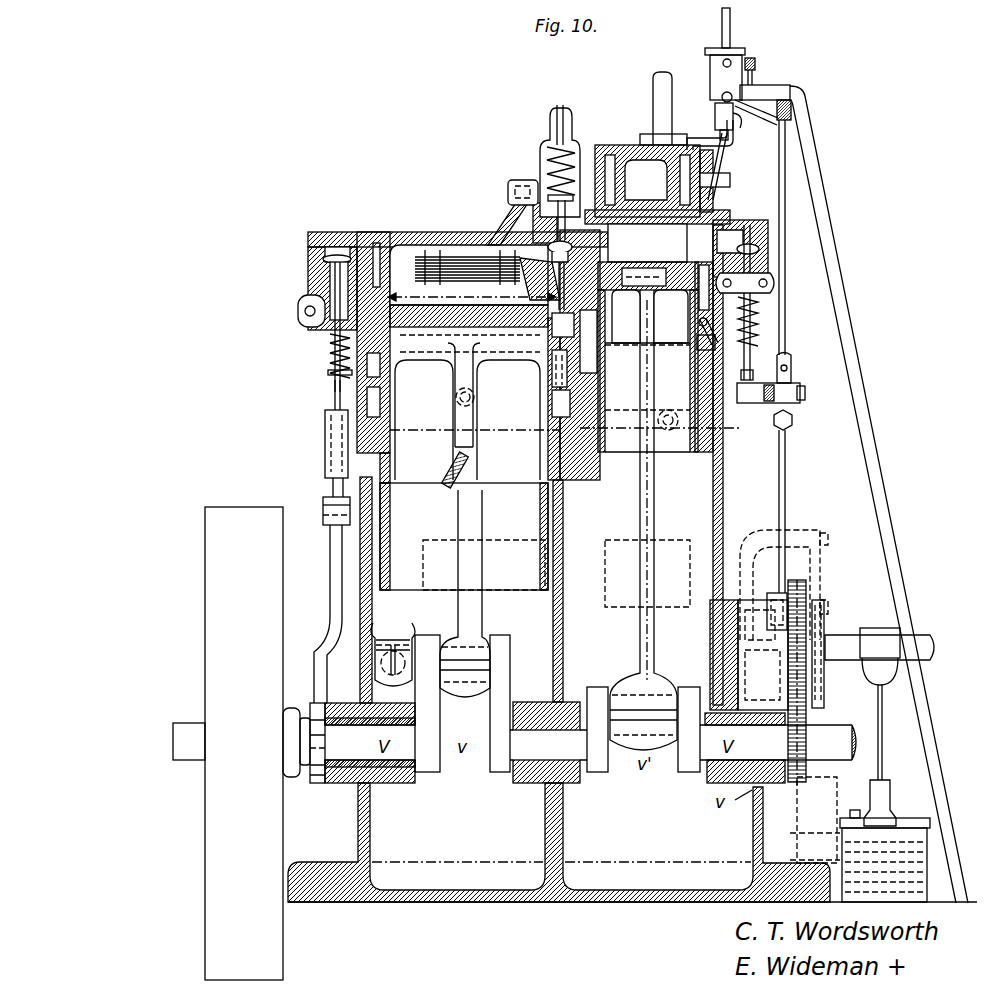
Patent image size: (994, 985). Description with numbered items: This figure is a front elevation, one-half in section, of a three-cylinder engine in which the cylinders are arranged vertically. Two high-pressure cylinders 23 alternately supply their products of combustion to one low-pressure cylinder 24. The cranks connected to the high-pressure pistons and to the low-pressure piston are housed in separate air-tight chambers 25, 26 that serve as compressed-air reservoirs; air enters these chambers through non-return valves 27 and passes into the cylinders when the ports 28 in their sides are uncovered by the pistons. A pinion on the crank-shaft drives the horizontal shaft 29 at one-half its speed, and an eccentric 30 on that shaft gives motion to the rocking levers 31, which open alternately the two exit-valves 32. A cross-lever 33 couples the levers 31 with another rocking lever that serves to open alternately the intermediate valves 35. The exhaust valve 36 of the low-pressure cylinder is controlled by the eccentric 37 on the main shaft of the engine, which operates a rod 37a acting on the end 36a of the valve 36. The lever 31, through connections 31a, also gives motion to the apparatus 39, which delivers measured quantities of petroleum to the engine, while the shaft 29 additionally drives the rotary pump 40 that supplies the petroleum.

The high-pressure cylinder 23 is at (647, 243).
The low-pressure cylinder 24 is at (464, 536).
The air-tight crank chamber 25 is at (658, 836).
The air-tight crank chamber 26 is at (559, 842).
The non-return valve 27 is at (393, 683).
The port 28 is at (392, 466).
The horizontal shaft 29 is at (924, 655).
The eccentric 30 is at (772, 615).
The rocking lever 31 is at (760, 405).
The connections 31a is at (785, 325).
The exit-valve 32 is at (762, 258).
The cross-lever 33 is at (735, 420).
The intermediate valve 35 is at (545, 233).
The exhaust valve of the low-pressure cylinder 36 is at (323, 262).
The valve end 36a is at (338, 388).
The eccentric 37 is at (321, 784).
The rod 37a is at (302, 614).
The petroleum-delivery apparatus 39 is at (720, 73).
The rotary pump 40 is at (870, 902).